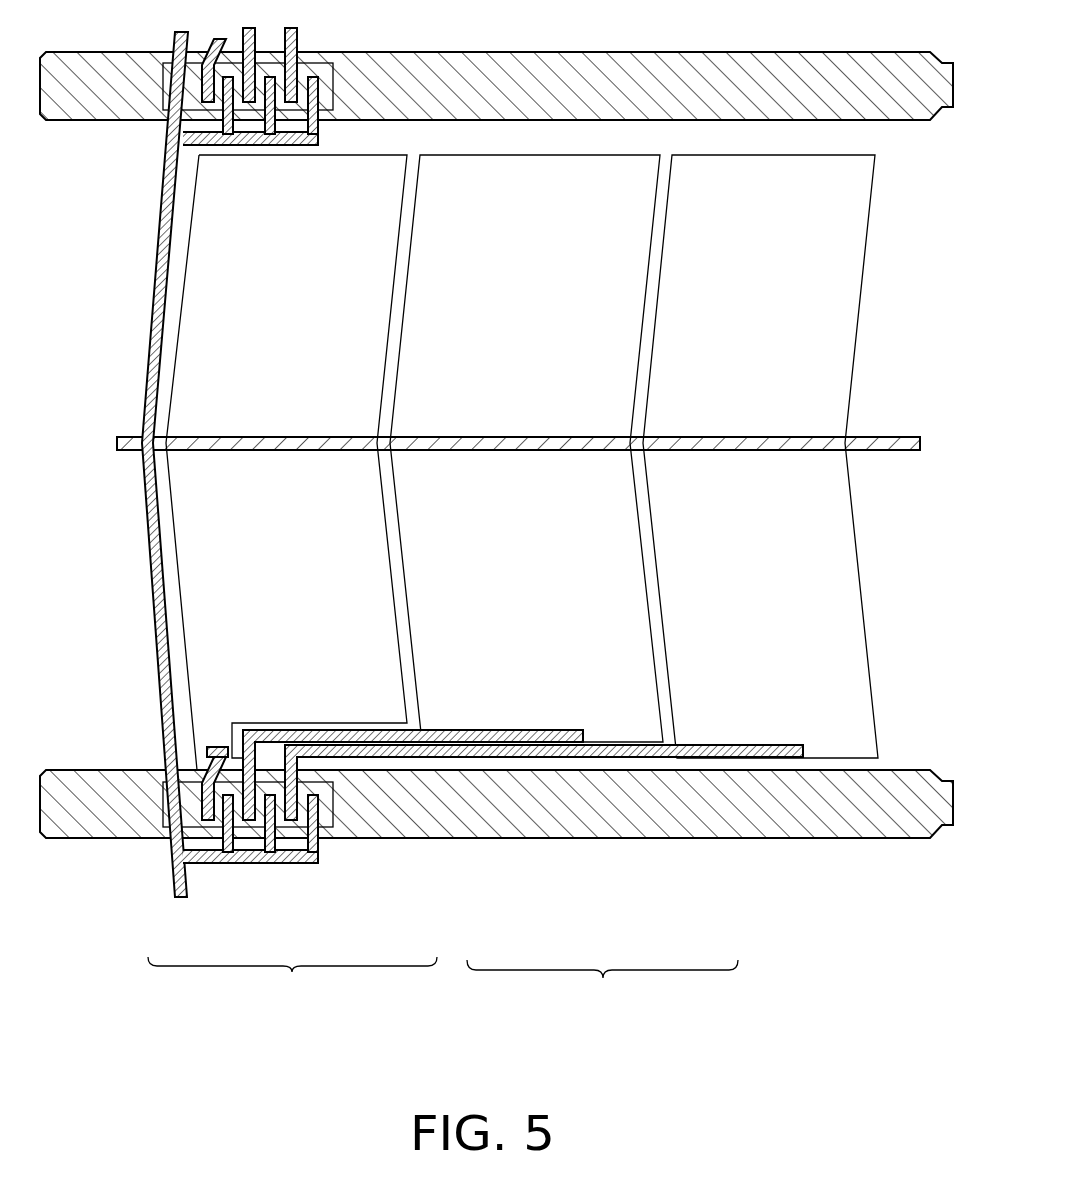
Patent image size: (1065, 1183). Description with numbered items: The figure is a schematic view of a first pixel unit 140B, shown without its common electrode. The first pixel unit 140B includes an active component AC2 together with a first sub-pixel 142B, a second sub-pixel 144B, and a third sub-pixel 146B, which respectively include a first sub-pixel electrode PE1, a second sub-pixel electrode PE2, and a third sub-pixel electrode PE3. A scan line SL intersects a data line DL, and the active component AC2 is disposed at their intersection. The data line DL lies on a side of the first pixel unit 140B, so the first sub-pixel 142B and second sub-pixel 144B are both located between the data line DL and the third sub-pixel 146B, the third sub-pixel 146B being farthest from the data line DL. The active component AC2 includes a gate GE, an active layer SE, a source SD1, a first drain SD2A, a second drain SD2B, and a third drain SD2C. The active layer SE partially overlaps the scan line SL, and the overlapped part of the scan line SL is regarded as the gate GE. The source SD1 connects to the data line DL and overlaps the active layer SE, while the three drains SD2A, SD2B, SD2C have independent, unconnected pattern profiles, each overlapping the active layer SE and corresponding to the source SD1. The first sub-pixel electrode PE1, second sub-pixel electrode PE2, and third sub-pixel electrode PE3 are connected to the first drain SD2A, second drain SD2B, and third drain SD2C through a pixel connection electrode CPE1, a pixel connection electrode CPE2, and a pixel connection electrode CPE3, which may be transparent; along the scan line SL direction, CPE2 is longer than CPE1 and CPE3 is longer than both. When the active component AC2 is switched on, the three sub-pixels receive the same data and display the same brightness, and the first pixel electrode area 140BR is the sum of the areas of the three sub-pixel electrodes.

The scan line SL is at (98, 768).
The data line DL is at (158, 578).
The gate GE is at (366, 810).
The active layer SE is at (211, 823).
The source SD1 is at (226, 848).
The first drain SD2A is at (243, 822).
The second drain SD2B is at (268, 833).
The third drain SD2C is at (298, 815).
The pixel connection electrode CPE1 is at (215, 747).
The pixel connection electrode CPE2 is at (283, 730).
The pixel connection electrode CPE3 is at (323, 745).
The first sub-pixel electrode PE1 is at (356, 558).
The second sub-pixel electrode PE2 is at (526, 558).
The third sub-pixel electrode PE3 is at (760, 558).
The first sub-pixel 142B is at (375, 705).
The second sub-pixel 144B is at (620, 710).
The third sub-pixel 146B is at (735, 712).
The active component AC2 is at (292, 985).
The first pixel unit 140B is at (938, 892).
The first pixel electrode area 140BR is at (602, 988).